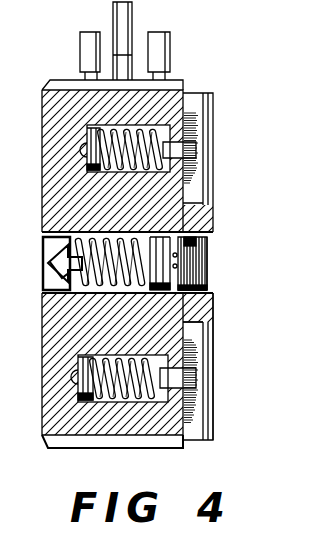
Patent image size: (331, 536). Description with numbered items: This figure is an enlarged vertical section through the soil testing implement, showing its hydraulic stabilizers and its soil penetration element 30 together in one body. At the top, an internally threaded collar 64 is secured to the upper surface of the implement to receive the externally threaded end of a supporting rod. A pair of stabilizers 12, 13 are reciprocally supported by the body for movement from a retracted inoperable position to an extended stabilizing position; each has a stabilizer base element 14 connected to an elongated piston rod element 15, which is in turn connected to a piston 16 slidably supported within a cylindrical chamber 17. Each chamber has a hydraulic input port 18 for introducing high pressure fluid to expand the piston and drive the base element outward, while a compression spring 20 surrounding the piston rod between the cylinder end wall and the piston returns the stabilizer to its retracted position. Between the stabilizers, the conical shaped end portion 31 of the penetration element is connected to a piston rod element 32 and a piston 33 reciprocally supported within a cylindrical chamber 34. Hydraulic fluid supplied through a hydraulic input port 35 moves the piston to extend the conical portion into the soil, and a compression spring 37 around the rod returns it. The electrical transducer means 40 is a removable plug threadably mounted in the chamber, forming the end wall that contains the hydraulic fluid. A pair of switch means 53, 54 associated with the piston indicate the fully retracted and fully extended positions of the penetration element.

The stabilizer 12 is at (214, 146).
The stabilizer 13 is at (214, 373).
The stabilizer base element 14 is at (203, 195).
The piston rod element 15 is at (212, 347).
The piston 16 is at (80, 356).
The cylindrical chamber 17 is at (172, 132).
The hydraulic input port 18 is at (78, 376).
The compression spring 20 is at (143, 133).
The soil penetration element 30 is at (50, 280).
The conical shaped end portion 31 is at (50, 262).
The piston rod element 32 is at (62, 254).
The piston 33 is at (213, 272).
The cylindrical chamber 34 is at (165, 231).
The hydraulic input port 35 is at (200, 285).
The compression spring 37 is at (75, 295).
The electrical transducer means 40 is at (210, 263).
The switch means 53 is at (175, 232).
The switch means 54 is at (117, 233).
The internally threaded collar 64 is at (132, 62).